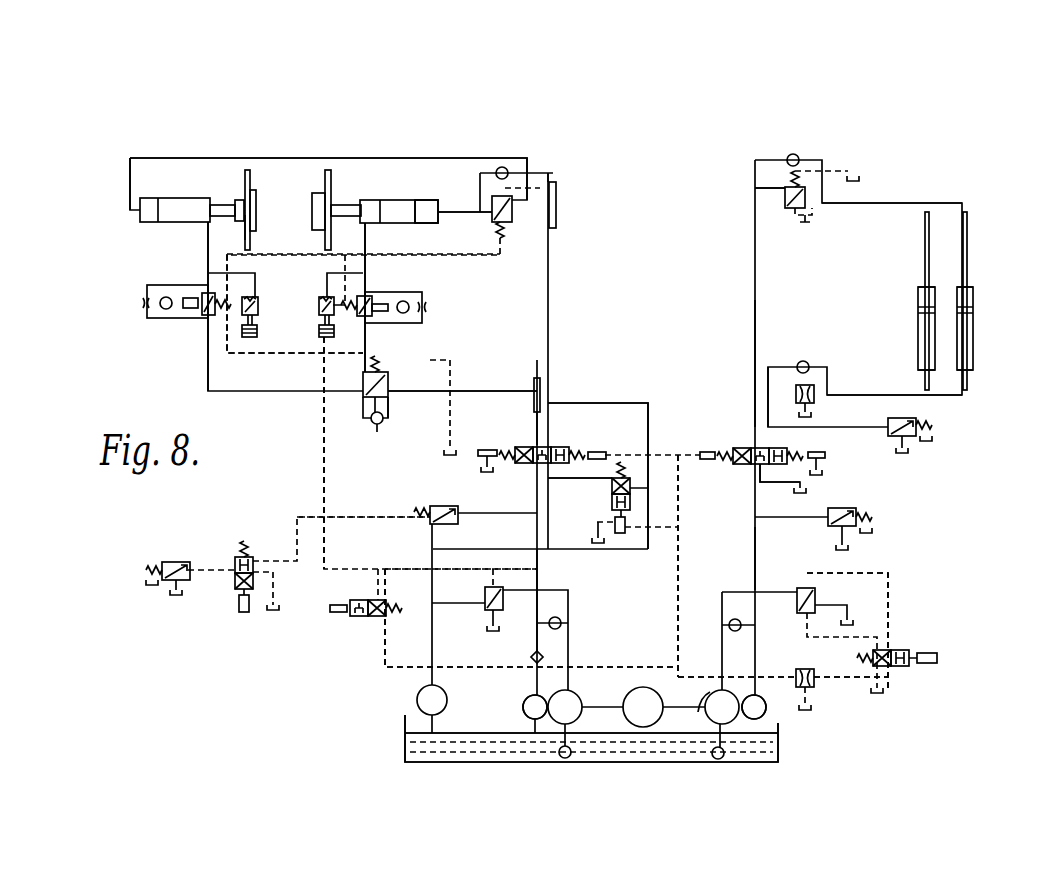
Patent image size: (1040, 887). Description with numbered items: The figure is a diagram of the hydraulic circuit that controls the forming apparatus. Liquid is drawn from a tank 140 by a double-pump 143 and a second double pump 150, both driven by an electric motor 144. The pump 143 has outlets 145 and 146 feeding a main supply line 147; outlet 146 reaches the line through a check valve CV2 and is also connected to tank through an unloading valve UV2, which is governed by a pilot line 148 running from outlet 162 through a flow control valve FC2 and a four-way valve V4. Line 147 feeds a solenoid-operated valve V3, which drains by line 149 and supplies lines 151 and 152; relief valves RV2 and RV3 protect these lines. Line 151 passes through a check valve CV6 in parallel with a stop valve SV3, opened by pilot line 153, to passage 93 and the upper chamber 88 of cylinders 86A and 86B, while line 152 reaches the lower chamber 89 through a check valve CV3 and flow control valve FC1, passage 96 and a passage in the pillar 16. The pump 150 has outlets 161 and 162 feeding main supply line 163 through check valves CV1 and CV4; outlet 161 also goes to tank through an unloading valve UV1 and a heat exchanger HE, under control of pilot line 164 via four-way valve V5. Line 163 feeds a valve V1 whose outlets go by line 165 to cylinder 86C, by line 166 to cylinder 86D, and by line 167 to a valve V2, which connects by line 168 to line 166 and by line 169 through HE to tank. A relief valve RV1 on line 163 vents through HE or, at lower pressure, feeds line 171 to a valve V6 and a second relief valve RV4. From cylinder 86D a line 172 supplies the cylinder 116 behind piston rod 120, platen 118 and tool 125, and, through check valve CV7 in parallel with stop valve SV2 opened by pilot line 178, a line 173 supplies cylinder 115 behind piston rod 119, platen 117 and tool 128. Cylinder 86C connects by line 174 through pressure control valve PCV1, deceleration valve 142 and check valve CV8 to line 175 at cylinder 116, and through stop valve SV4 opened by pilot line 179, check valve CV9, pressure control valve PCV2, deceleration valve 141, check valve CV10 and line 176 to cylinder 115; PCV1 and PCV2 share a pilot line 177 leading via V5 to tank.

The line 172 is at (130, 178).
The cylinder 116 is at (180, 183).
The piston rod 120 is at (195, 208).
The tool 128 is at (267, 219).
The tool 125 is at (254, 200).
The line 175 is at (208, 250).
The platen 118 is at (243, 227).
The platen 117 is at (330, 182).
The piston rod 119 is at (388, 210).
The cylinder 115 is at (417, 202).
The line 176 is at (365, 242).
The line 173 is at (457, 215).
The pilot operated stop valve SV2 is at (517, 217).
The one-way check valve CV7 is at (508, 171).
The pilot line 178 is at (545, 195).
The cylinder 86D is at (567, 222).
The line 166 is at (548, 337).
The one-way check valve CV8 is at (160, 297).
The mechanically operated deceleration valve 142 is at (215, 302).
The pressure control valve PCV1 is at (258, 311).
The pressure control valve PCV2 is at (319, 307).
The mechanically operated deceleration valve 141 is at (367, 300).
The one-way check valve CV10 is at (408, 302).
The stop valve SV4 is at (398, 376).
The pilot line 179 is at (392, 400).
The check valve CV9 is at (380, 430).
The pilot line 177 is at (324, 447).
The cylinder 86C is at (534, 381).
The line 174 is at (468, 392).
The line 165 is at (540, 430).
The solenoid-operated valve V1 is at (542, 469).
The line 168 is at (620, 403).
The line 167 is at (565, 480).
The solenoid operated valve V2 is at (609, 497).
The line 169 is at (625, 550).
The line 171 is at (395, 517).
The pressure relief valve RV1 is at (438, 502).
The pilot line 164 is at (407, 569).
The main supply line 163 is at (540, 565).
The second relief valve RV4 is at (174, 557).
The solenoid operated valve V6 is at (230, 576).
The solenoid-operated four-way valve V5 is at (366, 596).
The pilot operated unloading valve UV1 is at (475, 595).
The one-way check valve CV1 is at (560, 621).
The one-way check valve CV4 is at (514, 659).
The heat exchanger HE is at (442, 687).
The outlet 162 is at (524, 700).
The second double pump 150 is at (545, 705).
The outlet 161 is at (568, 696).
The electric motor 144 is at (648, 700).
The outlet 146 is at (706, 724).
The double-pump 143 is at (742, 696).
The outlet 145 is at (757, 697).
The tank 140 is at (770, 762).
The one-way check valve CV6 is at (787, 163).
The pilot operated stop valve SV3 is at (785, 200).
The pilot line 153 is at (785, 219).
The passage 93 is at (940, 205).
The pillar 16 is at (963, 230).
The upper chamber 88 is at (957, 290).
The cylinder 86A is at (918, 332).
The cylinder 86B is at (987, 328).
The lower chamber 89 is at (957, 360).
The one-way check valve CV3 is at (812, 357).
The line 151 is at (755, 380).
The line 152 is at (768, 408).
The flow control valve FC1 is at (826, 404).
The pressure relief valve RV3 is at (907, 415).
The passage 96 is at (957, 395).
The solenoid-operated valve V3 is at (762, 459).
The line 149 is at (780, 488).
The pressure relief valve RV2 is at (853, 505).
The main supply line 147 is at (753, 527).
The pilot-operated unloading valve UV2 is at (788, 603).
The pilot line 148 is at (888, 590).
The one way check valve CV2 is at (731, 630).
The flow control valve FC2 is at (824, 668).
The solenoid operated four-way valve V4 is at (897, 645).